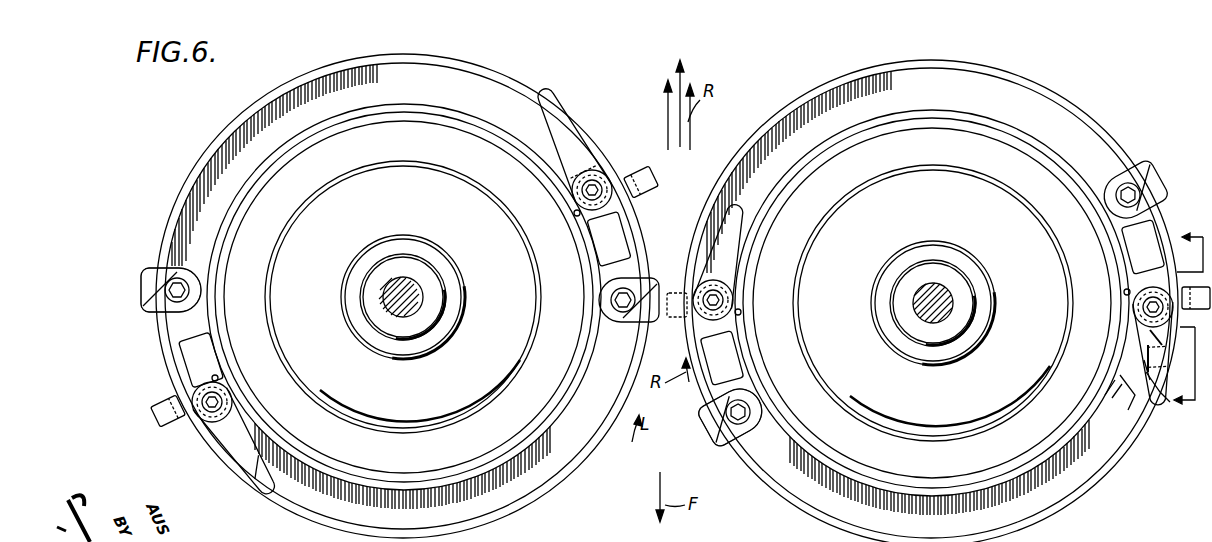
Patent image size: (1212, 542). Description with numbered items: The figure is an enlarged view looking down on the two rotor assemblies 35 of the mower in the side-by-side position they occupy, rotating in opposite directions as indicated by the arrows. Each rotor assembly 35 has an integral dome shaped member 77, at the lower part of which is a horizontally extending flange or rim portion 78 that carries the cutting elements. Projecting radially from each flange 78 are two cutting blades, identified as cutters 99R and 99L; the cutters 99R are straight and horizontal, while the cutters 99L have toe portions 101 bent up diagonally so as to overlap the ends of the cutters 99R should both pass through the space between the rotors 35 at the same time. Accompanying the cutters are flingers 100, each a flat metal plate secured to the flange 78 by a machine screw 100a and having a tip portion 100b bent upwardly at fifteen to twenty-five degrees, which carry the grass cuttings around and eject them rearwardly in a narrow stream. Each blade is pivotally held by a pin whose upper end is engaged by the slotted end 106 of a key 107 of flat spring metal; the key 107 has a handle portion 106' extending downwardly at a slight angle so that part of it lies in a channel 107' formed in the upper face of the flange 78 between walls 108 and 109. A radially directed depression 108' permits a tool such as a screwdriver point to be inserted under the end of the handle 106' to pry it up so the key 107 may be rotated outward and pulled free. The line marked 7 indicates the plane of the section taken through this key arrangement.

The rotor assembly 35 is at (493, 97).
The dome shaped member 77 is at (447, 148).
The flange or rim portion 78 is at (580, 455).
The flinger 100 is at (150, 305).
The machine screw 100a is at (170, 290).
The tip portion 100b is at (145, 270).
The toe portion 101 is at (655, 180).
The cutter 99L is at (650, 166).
The cutter 99R is at (674, 318).
The slotted end 106 is at (1127, 345).
The key 107 is at (1108, 356).
The wall 108 is at (1114, 389).
The wall 109 is at (1160, 340).
The handle portion 106' is at (1105, 372).
The channel 107' is at (1118, 405).
The radially directed depression 108' is at (1179, 363).
The section line 7 is at (1188, 319).